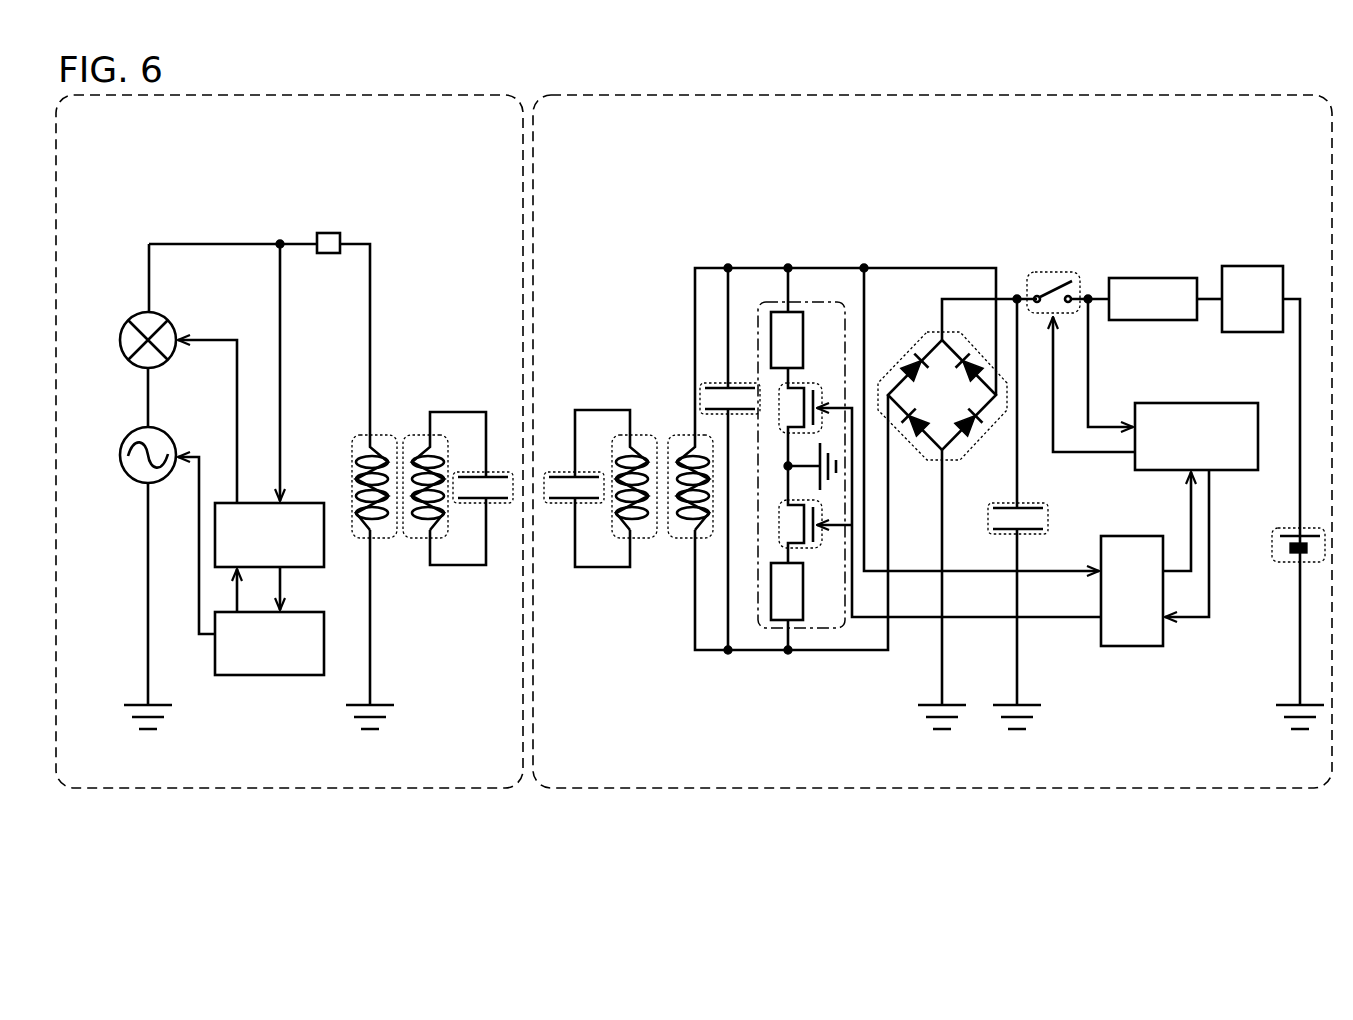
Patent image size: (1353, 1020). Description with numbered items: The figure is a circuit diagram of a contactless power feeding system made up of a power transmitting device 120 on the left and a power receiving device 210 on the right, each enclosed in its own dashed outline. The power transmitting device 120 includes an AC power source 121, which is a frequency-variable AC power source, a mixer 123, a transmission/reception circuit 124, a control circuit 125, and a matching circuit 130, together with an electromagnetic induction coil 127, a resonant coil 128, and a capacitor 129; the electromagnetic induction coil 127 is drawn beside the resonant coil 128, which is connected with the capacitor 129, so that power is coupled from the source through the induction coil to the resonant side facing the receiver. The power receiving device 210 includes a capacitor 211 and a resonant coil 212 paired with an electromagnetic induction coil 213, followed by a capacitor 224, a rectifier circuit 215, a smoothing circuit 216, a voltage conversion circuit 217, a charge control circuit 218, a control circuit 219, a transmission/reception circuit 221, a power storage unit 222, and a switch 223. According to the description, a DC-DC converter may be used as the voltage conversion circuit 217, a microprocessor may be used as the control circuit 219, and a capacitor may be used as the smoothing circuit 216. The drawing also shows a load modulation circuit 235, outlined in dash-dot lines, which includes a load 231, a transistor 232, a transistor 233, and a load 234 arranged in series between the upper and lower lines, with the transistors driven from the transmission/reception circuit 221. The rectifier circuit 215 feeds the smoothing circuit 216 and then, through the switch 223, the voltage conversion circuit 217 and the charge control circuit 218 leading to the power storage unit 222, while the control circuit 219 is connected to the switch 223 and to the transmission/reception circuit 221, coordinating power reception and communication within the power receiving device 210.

The power transmitting device 120 is at (465, 766).
The AC power source 121 is at (158, 428).
The mixer 123 is at (165, 320).
The transmission/reception circuit 124 is at (269, 556).
The control circuit 125 is at (269, 622).
The electromagnetic induction coil 127 is at (394, 434).
The resonant coil 128 is at (417, 540).
The capacitor 129 is at (497, 504).
The matching circuit 130 is at (328, 255).
The power receiving device 210 is at (580, 766).
The capacitor 211 is at (556, 472).
The resonant coil 212 is at (639, 436).
The electromagnetic induction coil 213 is at (672, 436).
The rectifier circuit 215 is at (913, 446).
The smoothing circuit 216 is at (1003, 503).
The voltage conversion circuit 217 is at (1165, 299).
The charge control circuit 218 is at (1261, 485).
The control circuit 219 is at (1173, 435).
The transmission/reception circuit 221 is at (1155, 558).
The power storage unit 222 is at (1280, 562).
The switch 223 is at (1045, 272).
The capacitor 224 is at (710, 383).
The load 231 is at (780, 310).
The transistor 232 is at (812, 383).
The transistor 233 is at (812, 548).
The load 234 is at (773, 628).
The load modulation circuit 235 is at (828, 630).